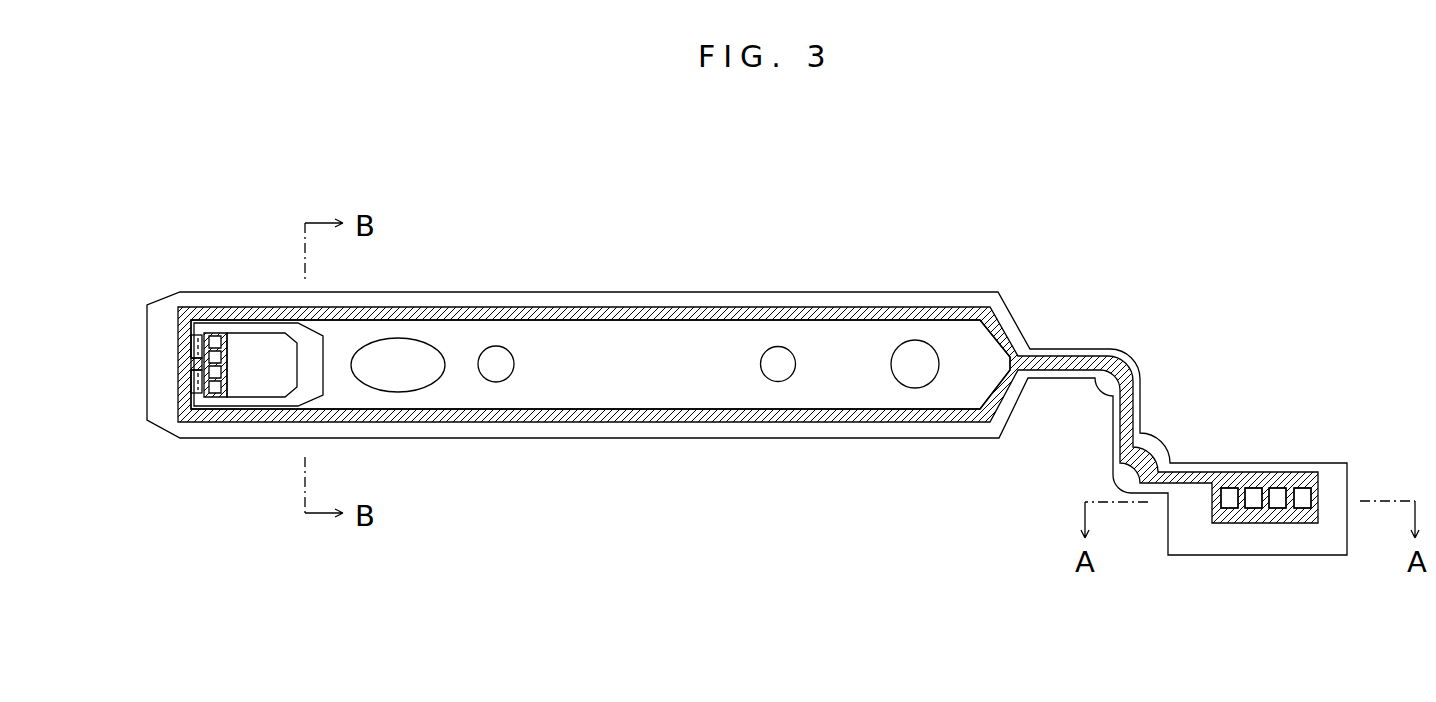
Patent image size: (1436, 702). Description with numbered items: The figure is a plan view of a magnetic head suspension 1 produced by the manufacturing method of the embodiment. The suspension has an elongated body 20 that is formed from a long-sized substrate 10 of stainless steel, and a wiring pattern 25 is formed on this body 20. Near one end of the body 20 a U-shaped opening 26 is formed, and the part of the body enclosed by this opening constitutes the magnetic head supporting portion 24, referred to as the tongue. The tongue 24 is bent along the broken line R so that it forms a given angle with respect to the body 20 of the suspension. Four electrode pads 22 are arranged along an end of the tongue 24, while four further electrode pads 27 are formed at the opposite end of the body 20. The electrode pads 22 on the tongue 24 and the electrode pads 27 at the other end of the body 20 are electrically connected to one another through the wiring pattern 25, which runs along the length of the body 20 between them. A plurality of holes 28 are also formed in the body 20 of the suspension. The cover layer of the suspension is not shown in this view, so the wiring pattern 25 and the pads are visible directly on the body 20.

The magnetic head suspension 1 is at (753, 172).
The long-sized substrate 10 is at (848, 290).
The body 20 is at (678, 347).
The electrode pads 22 is at (213, 337).
The magnetic head supporting portion 24 is at (261, 340).
The wiring pattern 25 is at (595, 307).
The U-shaped opening 26 is at (255, 402).
The electrode pads 27 is at (1227, 500).
The holes 28 is at (412, 347).
The broken line R is at (193, 338).